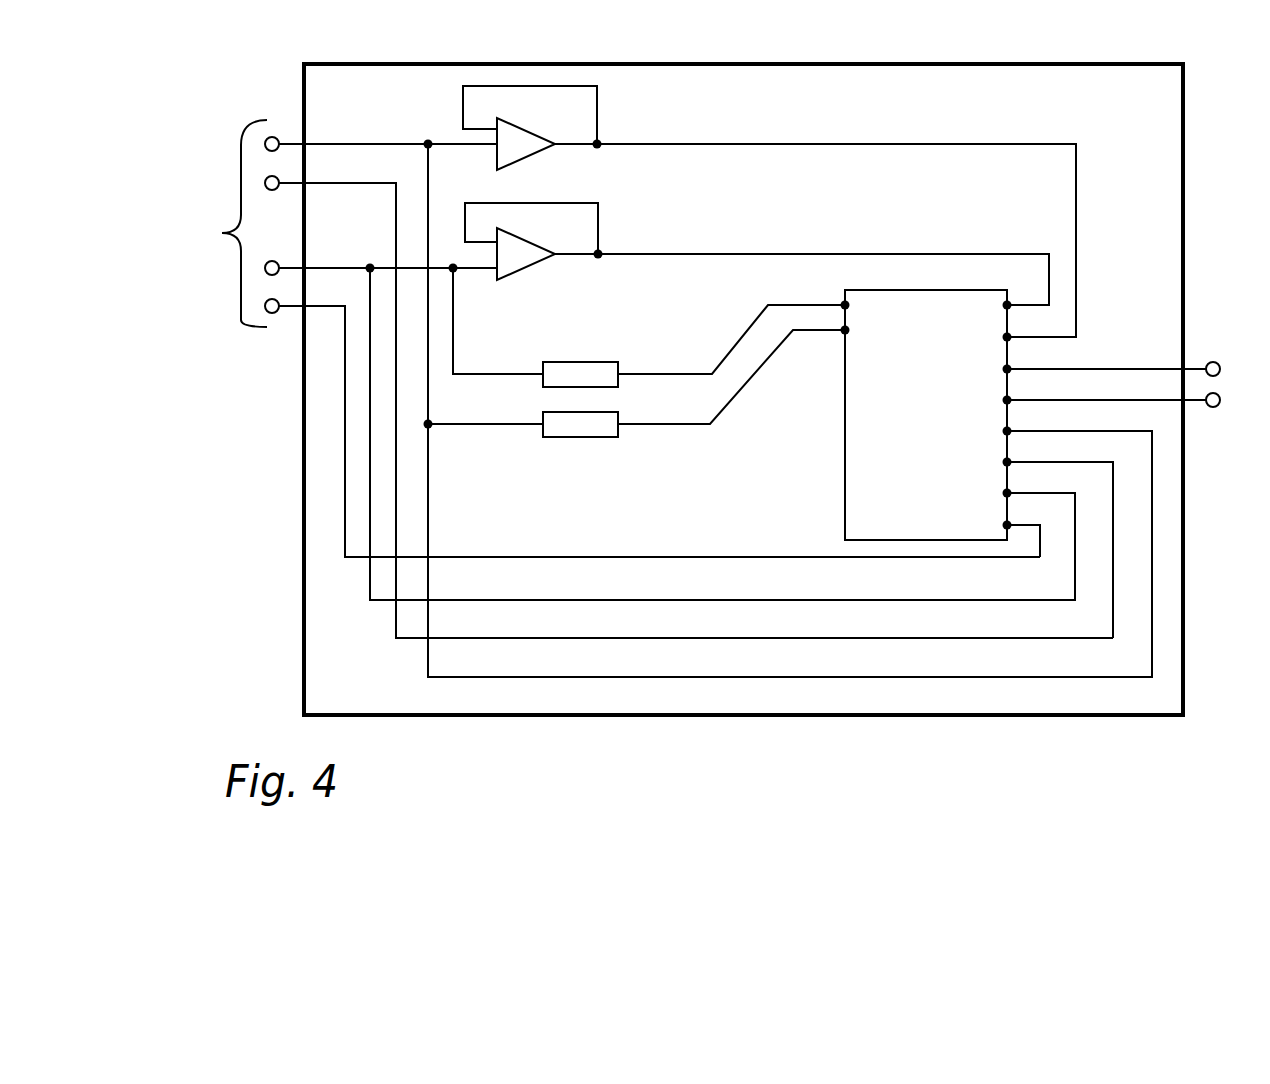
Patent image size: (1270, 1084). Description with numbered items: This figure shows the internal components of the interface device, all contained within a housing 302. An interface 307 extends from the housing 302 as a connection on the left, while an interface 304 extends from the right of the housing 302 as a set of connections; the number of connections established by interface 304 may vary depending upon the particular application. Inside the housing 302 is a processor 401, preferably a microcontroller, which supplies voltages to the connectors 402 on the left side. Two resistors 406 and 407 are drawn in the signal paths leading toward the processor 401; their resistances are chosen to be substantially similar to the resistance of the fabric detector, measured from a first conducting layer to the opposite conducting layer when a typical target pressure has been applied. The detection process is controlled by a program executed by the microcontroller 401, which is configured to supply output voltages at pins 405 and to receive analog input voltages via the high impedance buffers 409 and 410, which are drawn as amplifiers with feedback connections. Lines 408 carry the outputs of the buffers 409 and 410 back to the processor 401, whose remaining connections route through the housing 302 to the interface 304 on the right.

The housing 302 is at (676, 703).
The interface 304 is at (1215, 433).
The interface 307 is at (247, 418).
The processor 401 is at (759, 409).
The connectors 402 is at (227, 223).
The pins 405 is at (805, 345).
The resistor 406 is at (596, 375).
The resistor 407 is at (575, 424).
The feedback lines 408 is at (1093, 287).
The high impedance buffer 409 is at (520, 146).
The high impedance buffer 410 is at (518, 255).